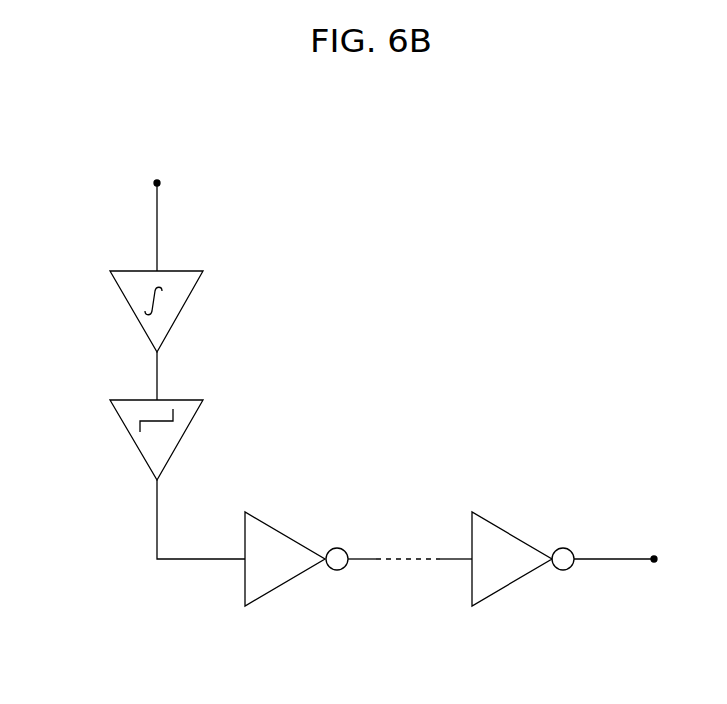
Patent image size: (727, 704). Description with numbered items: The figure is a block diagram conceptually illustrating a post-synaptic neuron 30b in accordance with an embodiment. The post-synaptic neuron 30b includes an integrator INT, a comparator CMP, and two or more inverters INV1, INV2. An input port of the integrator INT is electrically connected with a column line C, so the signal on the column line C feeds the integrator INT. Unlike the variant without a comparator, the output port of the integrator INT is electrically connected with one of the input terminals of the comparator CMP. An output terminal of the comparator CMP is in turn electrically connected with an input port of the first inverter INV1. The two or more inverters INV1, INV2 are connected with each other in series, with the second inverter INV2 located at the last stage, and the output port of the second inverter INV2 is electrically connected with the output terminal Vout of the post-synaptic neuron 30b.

The post-synaptic neuron 30b is at (399, 160).
The column line C is at (159, 212).
The integrator INT is at (183, 305).
The comparator CMP is at (183, 437).
The first inverter INV1 is at (288, 535).
The second inverter INV2 is at (513, 535).
The output terminal Vout is at (641, 560).